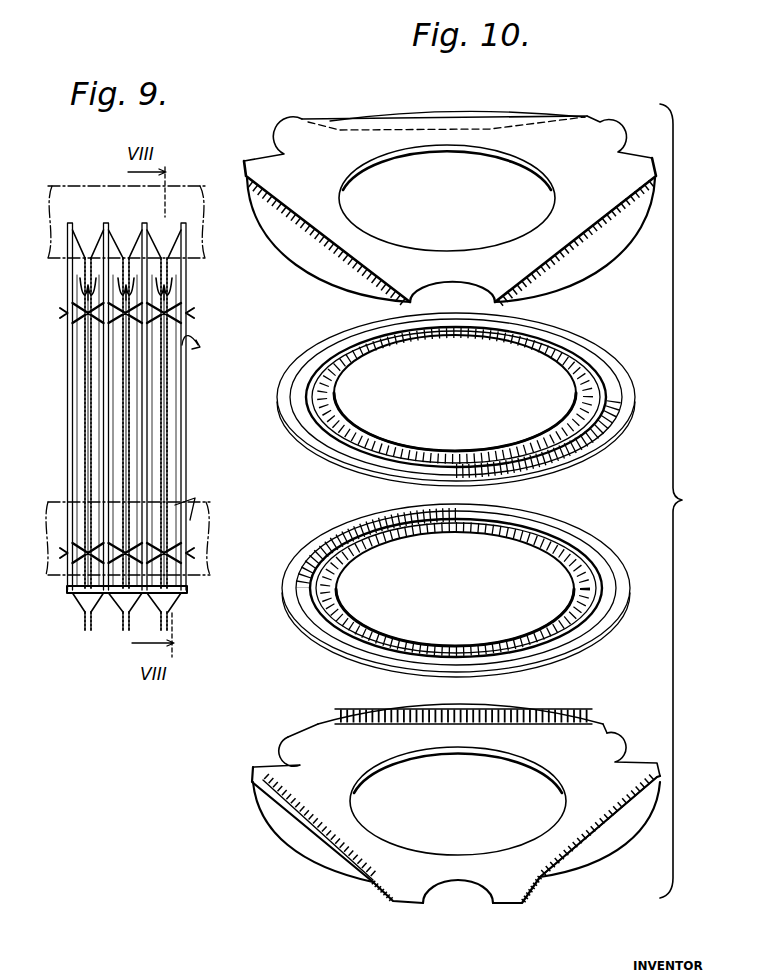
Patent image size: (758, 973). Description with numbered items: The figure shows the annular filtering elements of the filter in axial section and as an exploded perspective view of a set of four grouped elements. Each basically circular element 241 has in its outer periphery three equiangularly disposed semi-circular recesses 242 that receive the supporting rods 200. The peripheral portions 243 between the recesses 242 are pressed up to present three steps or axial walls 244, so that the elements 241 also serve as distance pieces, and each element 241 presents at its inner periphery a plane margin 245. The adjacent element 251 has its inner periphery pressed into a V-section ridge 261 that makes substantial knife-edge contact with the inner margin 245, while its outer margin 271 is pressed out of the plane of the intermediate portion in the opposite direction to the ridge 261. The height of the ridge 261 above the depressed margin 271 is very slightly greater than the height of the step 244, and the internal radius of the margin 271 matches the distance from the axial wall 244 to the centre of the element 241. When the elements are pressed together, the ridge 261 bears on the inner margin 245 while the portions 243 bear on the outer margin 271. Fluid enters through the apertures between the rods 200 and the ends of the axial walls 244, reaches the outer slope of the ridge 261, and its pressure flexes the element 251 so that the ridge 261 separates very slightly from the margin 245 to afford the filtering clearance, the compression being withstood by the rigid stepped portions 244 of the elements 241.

In FIG. 9, the supporting rod 200 is at (115, 200).
In FIG. 9, the annular element 241 is at (104, 222).
In FIG. 10, the annular element 241 is at (567, 155).
In FIG. 10, the semi-circular recess 242 is at (265, 160).
In FIG. 9, the peripheral portion 243 is at (122, 630).
In FIG. 10, the peripheral portion 243 is at (413, 110).
In FIG. 9, the step or axial wall 244 is at (72, 250).
In FIG. 10, the step or axial wall 244 is at (490, 128).
In FIG. 9, the plane margin 245 is at (78, 322).
In FIG. 10, the plane margin 245 is at (362, 757).
In FIG. 9, the adjacent element 251 is at (77, 316).
In FIG. 10, the adjacent element 251 is at (578, 370).
In FIG. 9, the V-section ridge 261 is at (94, 443).
In FIG. 10, the V-section ridge 261 is at (330, 380).
In FIG. 9, the outer margin 271 is at (85, 270).
In FIG. 10, the outer margin 271 is at (615, 397).